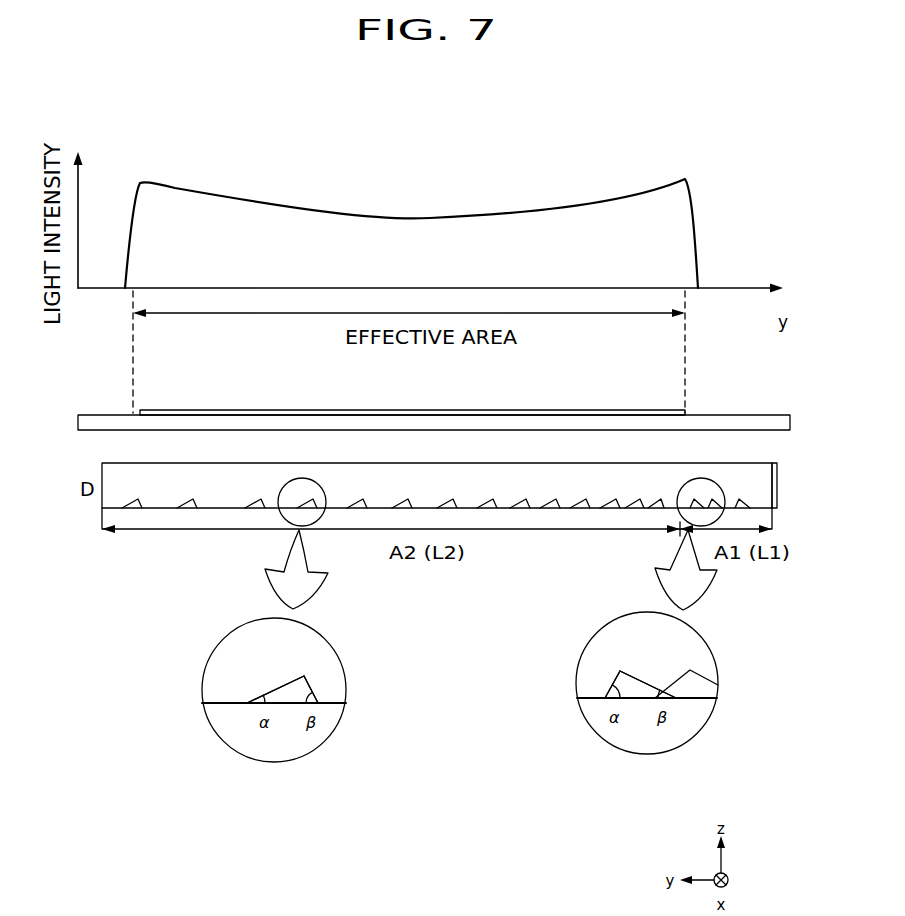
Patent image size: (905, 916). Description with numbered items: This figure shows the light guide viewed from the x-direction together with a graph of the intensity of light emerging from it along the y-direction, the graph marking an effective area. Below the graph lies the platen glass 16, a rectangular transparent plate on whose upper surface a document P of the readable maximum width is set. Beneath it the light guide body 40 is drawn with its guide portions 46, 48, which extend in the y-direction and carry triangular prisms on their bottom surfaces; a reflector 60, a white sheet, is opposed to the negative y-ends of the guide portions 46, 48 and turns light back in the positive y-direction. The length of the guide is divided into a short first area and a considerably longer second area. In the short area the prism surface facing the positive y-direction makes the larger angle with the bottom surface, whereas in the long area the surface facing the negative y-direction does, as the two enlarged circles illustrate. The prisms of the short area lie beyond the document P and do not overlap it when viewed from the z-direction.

The platen glass 16 is at (318, 420).
The document P is at (458, 410).
The light guide plate 40 is at (426, 503).
The guide portion 46 is at (437, 473).
The guide portion 48 is at (584, 463).
The reflector 60 is at (777, 485).